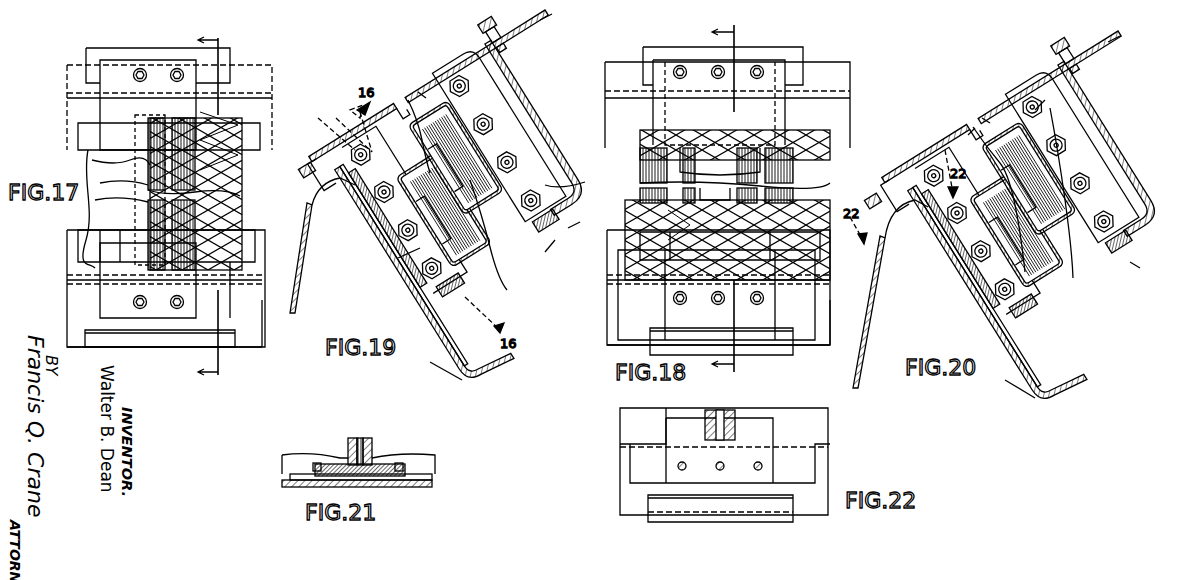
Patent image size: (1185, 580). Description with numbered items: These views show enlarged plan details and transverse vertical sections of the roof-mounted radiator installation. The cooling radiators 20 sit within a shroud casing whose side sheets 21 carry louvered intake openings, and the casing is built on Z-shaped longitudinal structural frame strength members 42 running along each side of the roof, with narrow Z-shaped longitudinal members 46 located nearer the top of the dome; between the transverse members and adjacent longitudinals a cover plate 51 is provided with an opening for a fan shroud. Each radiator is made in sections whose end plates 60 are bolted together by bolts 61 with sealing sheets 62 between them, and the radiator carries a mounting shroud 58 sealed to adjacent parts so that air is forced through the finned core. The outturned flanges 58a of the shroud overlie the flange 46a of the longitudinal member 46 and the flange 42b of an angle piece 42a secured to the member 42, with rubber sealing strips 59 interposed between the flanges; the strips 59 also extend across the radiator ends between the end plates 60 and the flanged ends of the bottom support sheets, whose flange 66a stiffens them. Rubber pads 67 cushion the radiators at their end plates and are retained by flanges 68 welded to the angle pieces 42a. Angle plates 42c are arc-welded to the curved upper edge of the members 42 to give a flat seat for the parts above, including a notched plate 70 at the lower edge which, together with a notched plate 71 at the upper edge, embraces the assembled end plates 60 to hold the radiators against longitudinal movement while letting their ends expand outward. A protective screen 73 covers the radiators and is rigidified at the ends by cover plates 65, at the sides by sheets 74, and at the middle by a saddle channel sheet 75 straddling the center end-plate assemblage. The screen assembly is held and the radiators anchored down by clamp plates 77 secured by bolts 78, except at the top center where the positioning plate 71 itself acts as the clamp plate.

In FIG. 17, the cooling radiator 20 is at (205, 188).
In FIG. 18, the cooling radiator 20 is at (640, 182).
In FIG. 17, the side sheet 21 is at (180, 352).
In FIG. 18, the side sheet 21 is at (790, 352).
In FIG. 19, the side sheet 21 is at (294, 300).
In FIG. 20, the side sheet 21 is at (860, 328).
In FIG. 22, the side sheet 21 is at (660, 518).
In FIG. 17, the longitudinal structural frame strength member 42 is at (252, 350).
In FIG. 18, the longitudinal structural frame strength member 42 is at (816, 336).
In FIG. 19, the longitudinal structural frame strength member 42 is at (456, 372).
In FIG. 20, the longitudinal structural frame strength member 42 is at (1030, 390).
In FIG. 21, the longitudinal structural frame strength member 42 is at (424, 488).
In FIG. 22, the longitudinal structural frame strength member 42 is at (624, 502).
In FIG. 19, the angle piece 42a is at (408, 300).
In FIG. 20, the angle piece 42a is at (990, 312).
In FIG. 21, the angle piece 42a is at (433, 474).
In FIG. 19, the flange 42b is at (440, 335).
In FIG. 20, the flange 42b is at (1022, 322).
In FIG. 17, the angle plate 42c is at (237, 304).
In FIG. 18, the angle plate 42c is at (810, 297).
In FIG. 19, the angle plate 42c is at (352, 178).
In FIG. 20, the angle plate 42c is at (920, 226).
In FIG. 22, the angle plate 42c is at (815, 465).
In FIG. 17, the longitudinal structural frame strength member 46 is at (262, 104).
In FIG. 18, the longitudinal structural frame strength member 46 is at (840, 106).
In FIG. 19, the longitudinal structural frame strength member 46 is at (512, 90).
In FIG. 20, the longitudinal structural frame strength member 46 is at (1108, 157).
In FIG. 19, the flange 46a is at (568, 245).
In FIG. 20, the flange 46a is at (1151, 270).
In FIG. 17, the cover plate 51 is at (232, 56).
In FIG. 18, the cover plate 51 is at (800, 52).
In FIG. 19, the cover plate 51 is at (548, 22).
In FIG. 20, the cover plate 51 is at (1115, 44).
In FIG. 19, the mounting shroud 58 is at (492, 160).
In FIG. 20, the mounting shroud 58 is at (1050, 178).
In FIG. 19, the outturned flange 58a is at (402, 287).
In FIG. 17, the sealing strip 59 is at (150, 122).
In FIG. 19, the sealing strip 59 is at (488, 260).
In FIG. 20, the sealing strip 59 is at (1035, 305).
In FIG. 20, the end plate 60 is at (1050, 125).
In FIG. 21, the end plate 60 is at (348, 444).
In FIG. 22, the end plate 60 is at (720, 410).
In FIG. 19, the bolt 61 is at (487, 125).
In FIG. 20, the bolt 61 is at (1042, 112).
In FIG. 21, the sealing sheet 62 is at (360, 438).
In FIG. 17, the cover plate 65 is at (95, 168).
In FIG. 19, the flange 66a is at (588, 217).
In FIG. 19, the pad 67 is at (387, 228).
In FIG. 20, the pad 67 is at (968, 275).
In FIG. 21, the pad 67 is at (398, 464).
In FIG. 19, the flange 68 is at (398, 256).
In FIG. 21, the flange 68 is at (288, 464).
In FIG. 19, the notched plate 70 is at (498, 135).
In FIG. 20, the notched plate 70 is at (938, 232).
In FIG. 22, the notched plate 70 is at (775, 418).
In FIG. 18, the notched plate 71 is at (790, 72).
In FIG. 19, the notched plate 71 is at (457, 195).
In FIG. 20, the notched plate 71 is at (990, 110).
In FIG. 18, the protective screen 73 is at (798, 205).
In FIG. 19, the protective screen 73 is at (418, 92).
In FIG. 20, the protective screen 73 is at (982, 118).
In FIG. 17, the sheet 74 is at (220, 112).
In FIG. 18, the sheet 74 is at (775, 98).
In FIG. 19, the sheet 74 is at (510, 38).
In FIG. 20, the sheet 74 is at (1036, 82).
In FIG. 17, the saddle channel sheet 75 is at (238, 162).
In FIG. 18, the saddle channel sheet 75 is at (748, 205).
In FIG. 20, the saddle channel sheet 75 is at (968, 135).
In FIG. 17, the clamp plate 77 is at (138, 62).
In FIG. 18, the clamp plate 77 is at (665, 310).
In FIG. 19, the clamp plate 77 is at (456, 70).
In FIG. 20, the clamp plate 77 is at (895, 165).
In FIG. 17, the bolt 78 is at (176, 66).
In FIG. 18, the bolt 78 is at (712, 306).
In FIG. 19, the bolt 78 is at (502, 28).
In FIG. 20, the bolt 78 is at (1068, 42).